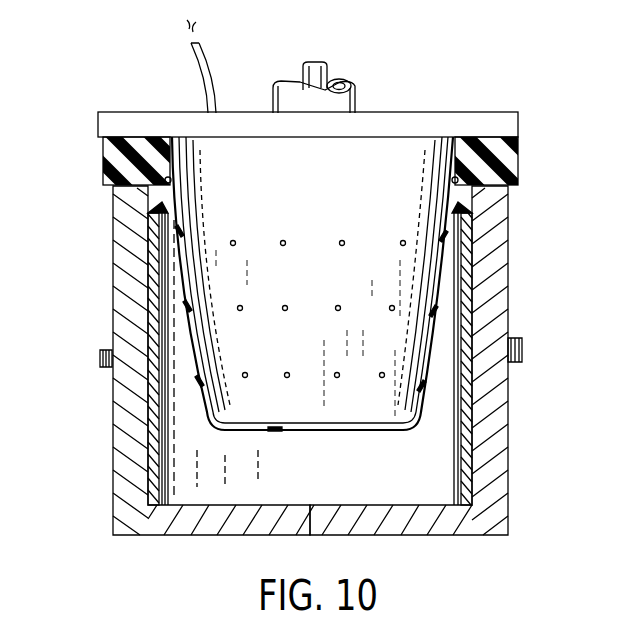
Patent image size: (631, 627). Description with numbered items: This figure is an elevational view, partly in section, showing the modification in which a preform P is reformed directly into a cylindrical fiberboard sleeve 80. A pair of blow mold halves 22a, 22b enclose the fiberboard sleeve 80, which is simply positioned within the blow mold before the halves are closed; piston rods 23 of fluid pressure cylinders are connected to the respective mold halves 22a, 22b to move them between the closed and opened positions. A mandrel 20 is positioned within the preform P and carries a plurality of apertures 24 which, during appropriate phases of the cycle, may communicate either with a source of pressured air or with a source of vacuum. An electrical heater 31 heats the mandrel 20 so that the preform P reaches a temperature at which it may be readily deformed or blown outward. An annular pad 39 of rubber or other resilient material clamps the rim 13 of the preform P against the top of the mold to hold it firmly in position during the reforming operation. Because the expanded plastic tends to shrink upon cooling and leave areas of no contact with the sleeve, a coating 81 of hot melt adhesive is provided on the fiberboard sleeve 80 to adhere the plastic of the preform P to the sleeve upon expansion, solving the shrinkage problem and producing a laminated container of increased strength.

The rim 13 is at (452, 179).
The mandrel 20 is at (212, 268).
The blow mold half 22a is at (113, 473).
The blow mold half 22b is at (508, 510).
The piston rods 23 is at (102, 359).
The apertures 24 is at (381, 372).
The electrical heater 31 is at (204, 65).
The annular pad 39 is at (103, 168).
The fiberboard sleeve 80 is at (468, 443).
The coating of hot melt adhesive 81 is at (453, 294).
The preform P is at (299, 438).